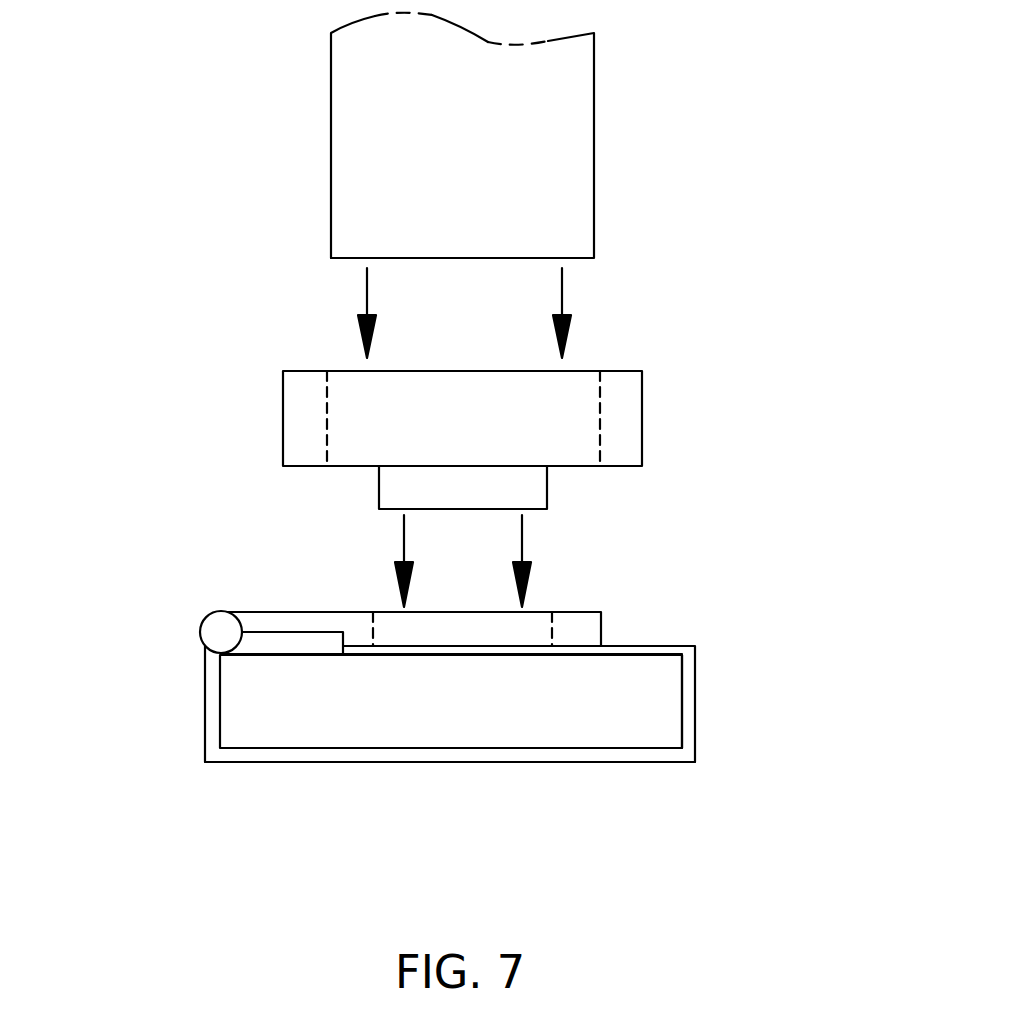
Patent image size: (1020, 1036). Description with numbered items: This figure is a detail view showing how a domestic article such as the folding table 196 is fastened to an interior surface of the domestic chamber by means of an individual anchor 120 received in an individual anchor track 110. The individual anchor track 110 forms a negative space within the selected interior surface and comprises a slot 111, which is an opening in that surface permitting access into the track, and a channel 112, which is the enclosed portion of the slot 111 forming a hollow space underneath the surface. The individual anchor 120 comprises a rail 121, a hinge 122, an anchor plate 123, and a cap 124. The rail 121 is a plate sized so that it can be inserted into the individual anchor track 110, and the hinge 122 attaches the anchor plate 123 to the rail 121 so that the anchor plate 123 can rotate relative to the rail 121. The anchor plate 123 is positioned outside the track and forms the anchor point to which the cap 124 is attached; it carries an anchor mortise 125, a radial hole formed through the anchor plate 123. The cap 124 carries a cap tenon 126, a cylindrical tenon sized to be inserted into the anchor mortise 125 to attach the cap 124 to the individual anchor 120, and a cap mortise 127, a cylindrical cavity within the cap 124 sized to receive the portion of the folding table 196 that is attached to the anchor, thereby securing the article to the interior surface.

The folding table 196 is at (563, 167).
The cap mortise 127 is at (570, 400).
The cap 124 is at (642, 416).
The cap tenon 126 is at (547, 487).
The anchor plate 123 is at (583, 627).
The rail 121 is at (593, 697).
The individual anchor track 110 is at (696, 694).
The slot 111 is at (309, 643).
The hinge 122 is at (212, 630).
The individual anchor 120 is at (250, 723).
The anchor mortise 125 is at (459, 625).
The channel 112 is at (687, 755).